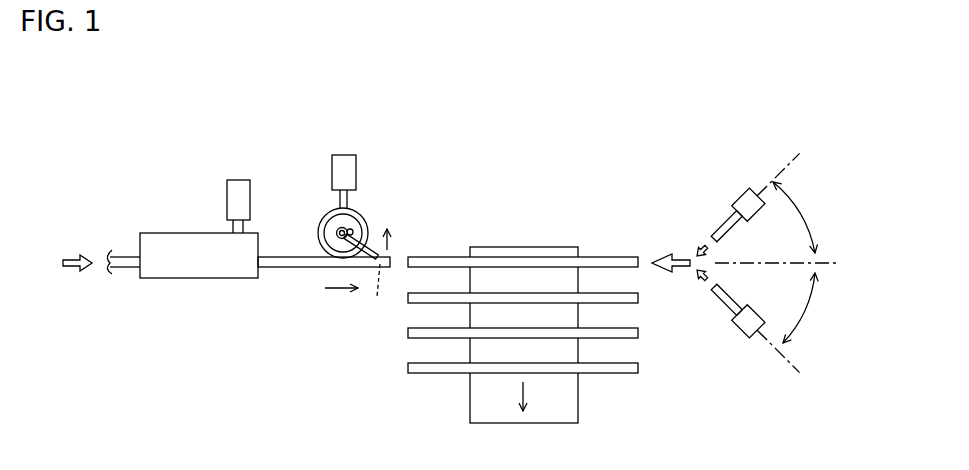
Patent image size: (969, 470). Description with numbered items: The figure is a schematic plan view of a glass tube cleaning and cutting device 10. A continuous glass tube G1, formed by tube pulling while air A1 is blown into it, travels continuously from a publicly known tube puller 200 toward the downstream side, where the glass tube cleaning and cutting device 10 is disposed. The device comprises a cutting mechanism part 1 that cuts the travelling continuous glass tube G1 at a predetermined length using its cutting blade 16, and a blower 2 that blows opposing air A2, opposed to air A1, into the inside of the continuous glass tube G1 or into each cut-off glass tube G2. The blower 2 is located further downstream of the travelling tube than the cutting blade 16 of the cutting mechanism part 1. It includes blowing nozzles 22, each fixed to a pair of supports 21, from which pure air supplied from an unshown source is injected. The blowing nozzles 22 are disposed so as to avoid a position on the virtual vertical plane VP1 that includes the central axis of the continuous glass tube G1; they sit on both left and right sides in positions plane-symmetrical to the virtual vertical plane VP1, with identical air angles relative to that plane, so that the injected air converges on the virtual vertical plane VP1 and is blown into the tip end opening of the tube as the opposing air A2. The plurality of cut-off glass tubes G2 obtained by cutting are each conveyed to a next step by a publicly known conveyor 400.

The glass tube cleaning and cutting device 10 is at (364, 108).
The cutting mechanism part 1 is at (386, 165).
The tube puller 200 is at (187, 229).
The cutting blade 16 is at (379, 293).
The conveyor 400 is at (580, 396).
The blower 2 is at (733, 264).
The support 21 is at (748, 187).
The blowing nozzle 22 is at (722, 220).
The continuous glass tube G1 is at (290, 268).
The cut-off glass tube G2 is at (615, 257).
The air A1 is at (77, 246).
The opposing air A2 is at (671, 250).
The virtual vertical plane VP1 is at (797, 265).